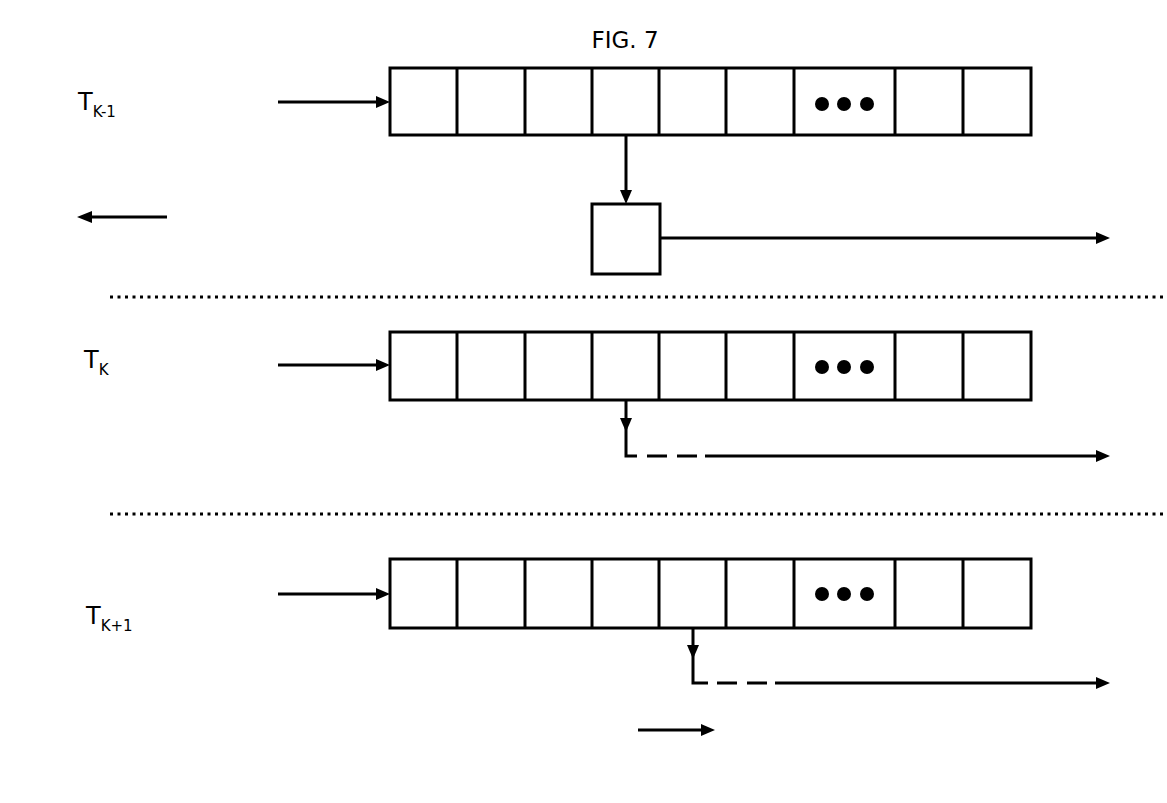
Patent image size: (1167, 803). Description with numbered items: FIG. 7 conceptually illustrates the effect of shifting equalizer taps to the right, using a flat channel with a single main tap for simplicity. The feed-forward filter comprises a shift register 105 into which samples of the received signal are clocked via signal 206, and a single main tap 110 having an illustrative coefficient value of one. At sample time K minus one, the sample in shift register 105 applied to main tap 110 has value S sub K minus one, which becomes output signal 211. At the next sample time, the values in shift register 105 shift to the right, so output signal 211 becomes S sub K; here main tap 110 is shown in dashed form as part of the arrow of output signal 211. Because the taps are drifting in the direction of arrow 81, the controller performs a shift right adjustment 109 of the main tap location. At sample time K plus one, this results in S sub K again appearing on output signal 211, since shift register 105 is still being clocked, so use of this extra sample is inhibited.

The signal 206 is at (302, 113).
The shift register 105 is at (403, 148).
The main tap 110 is at (582, 240).
The output signal 211 is at (1063, 225).
The arrow 81 is at (133, 230).
The shift right adjustment 109 is at (648, 718).